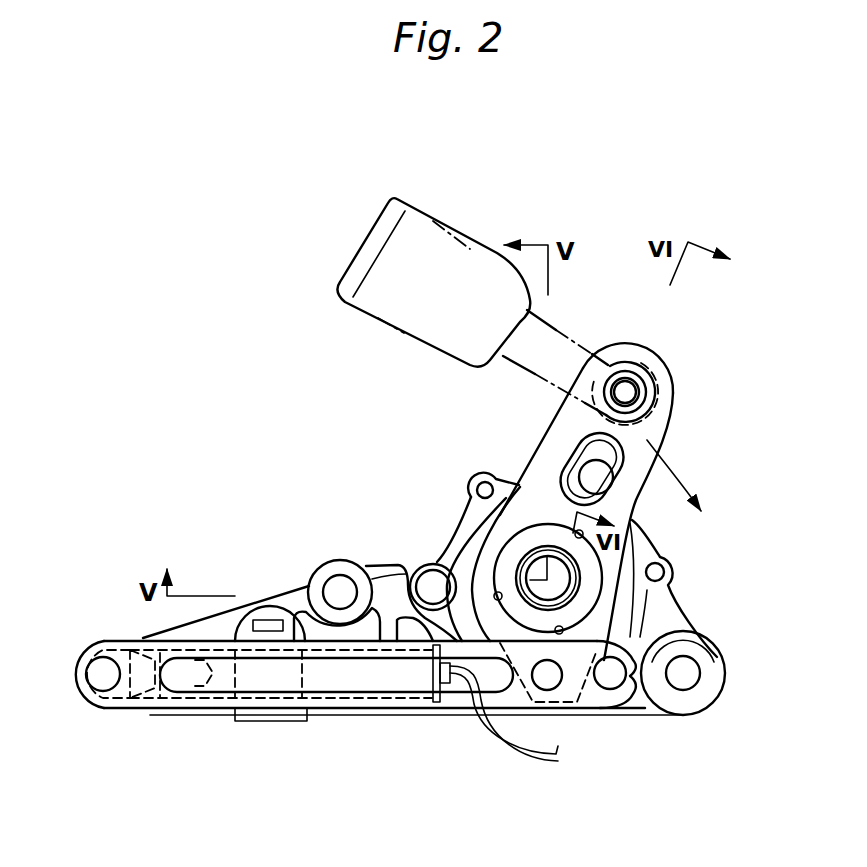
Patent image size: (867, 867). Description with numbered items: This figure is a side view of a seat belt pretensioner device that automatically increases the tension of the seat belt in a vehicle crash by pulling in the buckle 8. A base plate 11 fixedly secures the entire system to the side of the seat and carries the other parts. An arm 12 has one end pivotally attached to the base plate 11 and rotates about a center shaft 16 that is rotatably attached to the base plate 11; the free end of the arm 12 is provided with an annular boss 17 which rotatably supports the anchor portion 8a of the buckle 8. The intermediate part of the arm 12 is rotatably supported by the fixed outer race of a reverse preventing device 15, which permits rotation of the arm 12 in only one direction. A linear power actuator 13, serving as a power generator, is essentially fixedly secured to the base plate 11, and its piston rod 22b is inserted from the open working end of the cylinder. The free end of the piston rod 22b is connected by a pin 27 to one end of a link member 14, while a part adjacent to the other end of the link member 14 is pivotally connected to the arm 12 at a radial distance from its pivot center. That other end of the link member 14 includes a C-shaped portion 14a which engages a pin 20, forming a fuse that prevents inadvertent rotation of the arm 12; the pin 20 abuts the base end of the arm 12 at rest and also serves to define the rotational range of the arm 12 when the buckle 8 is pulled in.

The buckle 8 is at (488, 247).
The anchor portion 8a is at (673, 400).
The base plate 11 is at (283, 585).
The arm 12 is at (551, 421).
The linear power actuator 13 is at (389, 704).
The link member 14 is at (121, 712).
The C-shaped portion 14a is at (629, 700).
The reverse preventing device 15 is at (628, 603).
The center shaft 16 is at (595, 572).
The annular boss 17 is at (634, 378).
The pin 20 is at (607, 690).
The piston rod 22b is at (147, 688).
The pin 27 is at (101, 662).